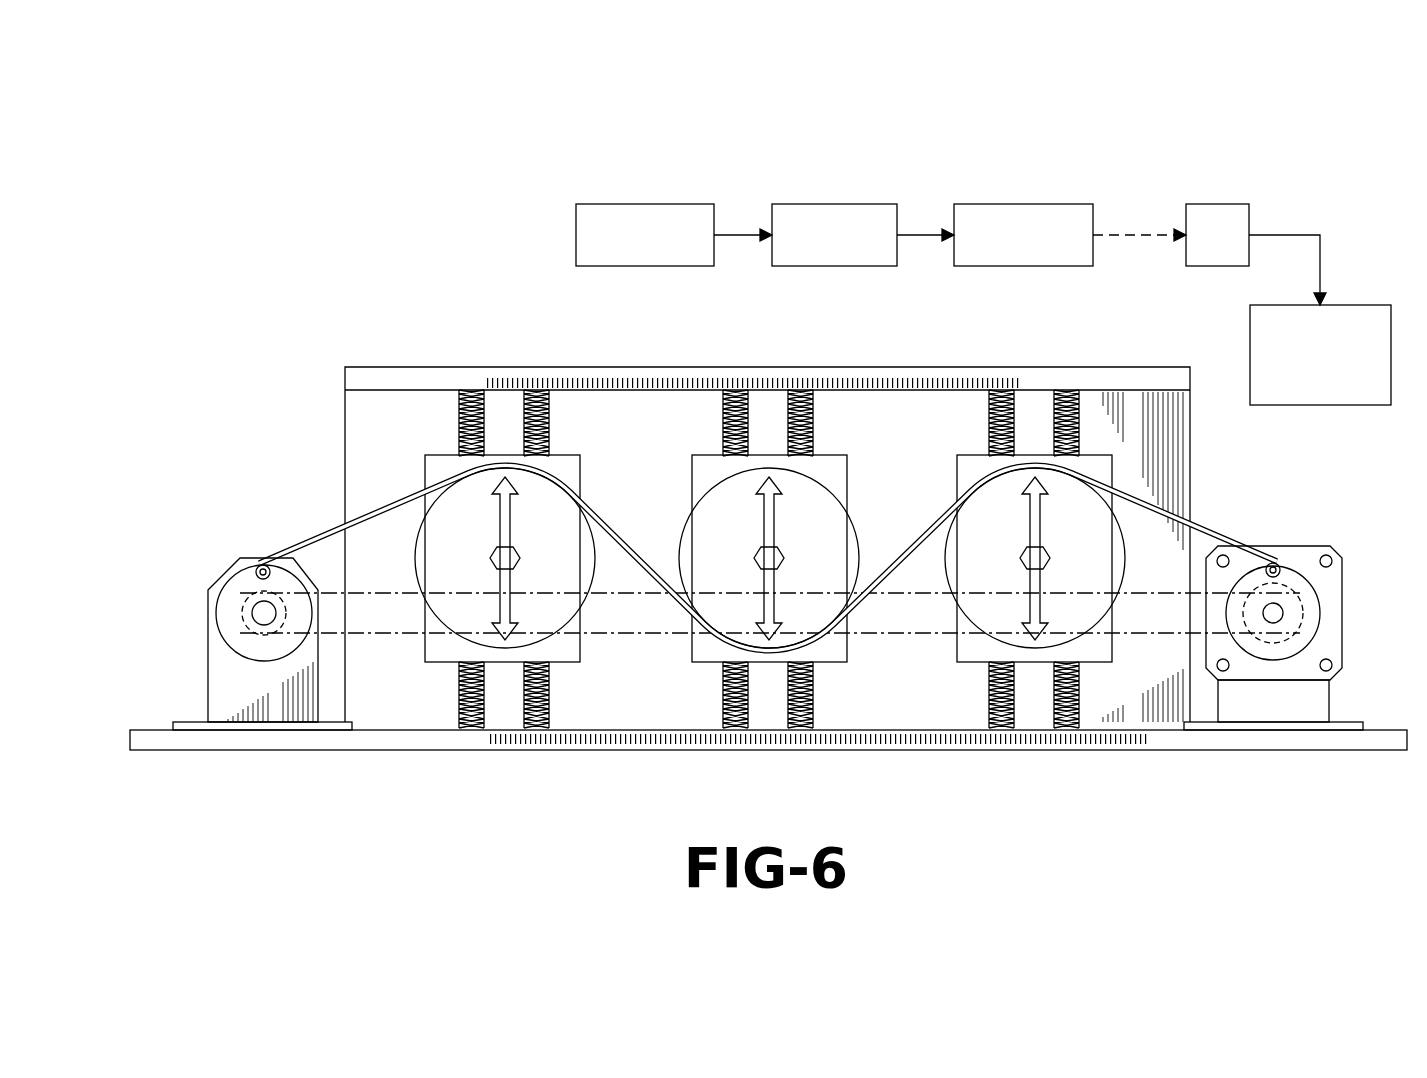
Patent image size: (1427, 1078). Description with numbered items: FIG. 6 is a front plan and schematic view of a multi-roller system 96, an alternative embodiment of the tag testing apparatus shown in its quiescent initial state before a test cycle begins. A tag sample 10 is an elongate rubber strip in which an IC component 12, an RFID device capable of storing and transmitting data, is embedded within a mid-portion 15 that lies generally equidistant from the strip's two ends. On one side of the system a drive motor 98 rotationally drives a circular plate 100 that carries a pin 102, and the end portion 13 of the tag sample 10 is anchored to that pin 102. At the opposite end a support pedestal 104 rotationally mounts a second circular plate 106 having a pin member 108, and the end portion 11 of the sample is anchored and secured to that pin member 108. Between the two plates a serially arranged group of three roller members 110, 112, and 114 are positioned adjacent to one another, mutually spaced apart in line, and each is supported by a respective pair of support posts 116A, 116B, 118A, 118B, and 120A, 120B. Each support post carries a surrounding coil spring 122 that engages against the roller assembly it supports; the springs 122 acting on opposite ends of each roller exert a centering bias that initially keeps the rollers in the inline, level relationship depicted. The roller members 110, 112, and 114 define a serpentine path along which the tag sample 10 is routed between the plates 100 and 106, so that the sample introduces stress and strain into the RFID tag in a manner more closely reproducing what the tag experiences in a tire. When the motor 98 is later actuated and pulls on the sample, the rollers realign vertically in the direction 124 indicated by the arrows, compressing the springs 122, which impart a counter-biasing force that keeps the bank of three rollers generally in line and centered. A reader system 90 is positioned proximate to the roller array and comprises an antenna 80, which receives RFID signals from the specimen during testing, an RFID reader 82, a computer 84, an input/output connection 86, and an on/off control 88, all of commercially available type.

The tag sample 10 is at (630, 551).
The end portion 11 is at (320, 532).
The IC component 12 is at (724, 676).
The end portion 13 is at (1242, 548).
The mid-portion 15 is at (762, 652).
The antenna 80 is at (640, 204).
The RFID reader 82 is at (832, 204).
The computer 84 is at (1023, 204).
The input/output connection 86 is at (1217, 204).
The on/off control 88 is at (1375, 305).
The reader system 90 is at (575, 184).
The multi-roller system 96 is at (228, 237).
The drive motor 98 is at (1295, 670).
The circular plate 100 is at (1305, 623).
The pin 102 is at (1275, 563).
The support pedestal 104 is at (246, 690).
The second circular plate 106 is at (235, 595).
The pin member 108 is at (258, 567).
The roller member 110 is at (560, 525).
The roller member 112 is at (825, 527).
The roller member 114 is at (1093, 605).
The support post 116A is at (470, 427).
The support post 116B is at (537, 427).
The support post 118A is at (735, 427).
The support post 118B is at (802, 427).
The support post 120A is at (1000, 427).
The support post 120B is at (1068, 427).
The coil spring 122 is at (540, 427).
The direction 124 is at (500, 512).